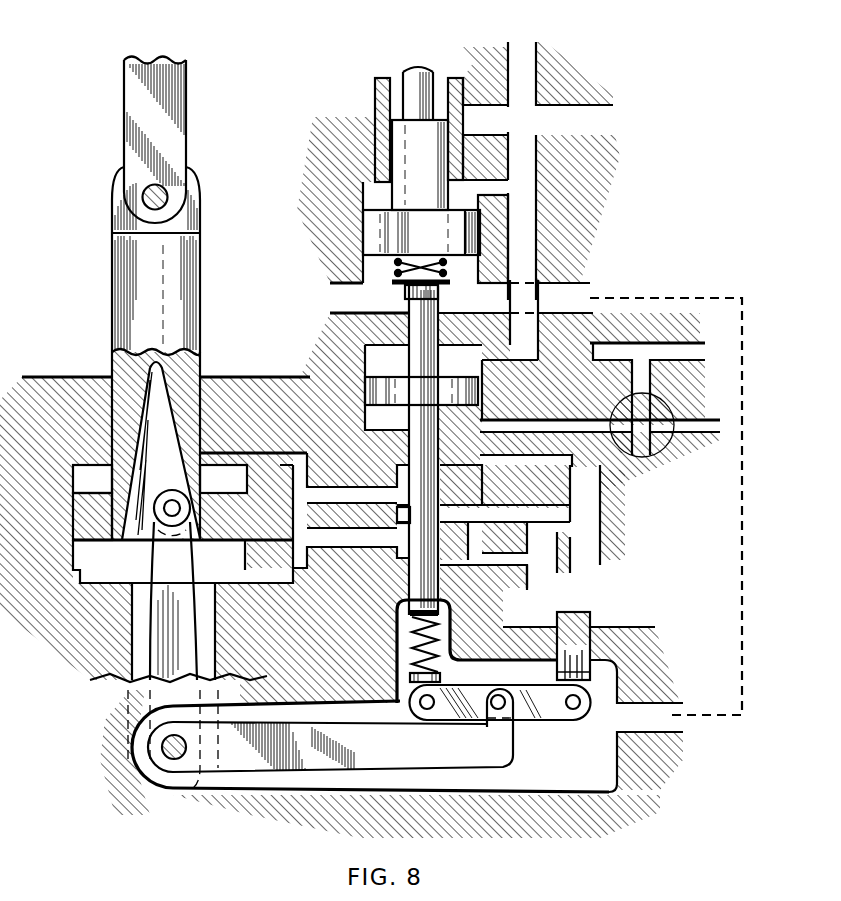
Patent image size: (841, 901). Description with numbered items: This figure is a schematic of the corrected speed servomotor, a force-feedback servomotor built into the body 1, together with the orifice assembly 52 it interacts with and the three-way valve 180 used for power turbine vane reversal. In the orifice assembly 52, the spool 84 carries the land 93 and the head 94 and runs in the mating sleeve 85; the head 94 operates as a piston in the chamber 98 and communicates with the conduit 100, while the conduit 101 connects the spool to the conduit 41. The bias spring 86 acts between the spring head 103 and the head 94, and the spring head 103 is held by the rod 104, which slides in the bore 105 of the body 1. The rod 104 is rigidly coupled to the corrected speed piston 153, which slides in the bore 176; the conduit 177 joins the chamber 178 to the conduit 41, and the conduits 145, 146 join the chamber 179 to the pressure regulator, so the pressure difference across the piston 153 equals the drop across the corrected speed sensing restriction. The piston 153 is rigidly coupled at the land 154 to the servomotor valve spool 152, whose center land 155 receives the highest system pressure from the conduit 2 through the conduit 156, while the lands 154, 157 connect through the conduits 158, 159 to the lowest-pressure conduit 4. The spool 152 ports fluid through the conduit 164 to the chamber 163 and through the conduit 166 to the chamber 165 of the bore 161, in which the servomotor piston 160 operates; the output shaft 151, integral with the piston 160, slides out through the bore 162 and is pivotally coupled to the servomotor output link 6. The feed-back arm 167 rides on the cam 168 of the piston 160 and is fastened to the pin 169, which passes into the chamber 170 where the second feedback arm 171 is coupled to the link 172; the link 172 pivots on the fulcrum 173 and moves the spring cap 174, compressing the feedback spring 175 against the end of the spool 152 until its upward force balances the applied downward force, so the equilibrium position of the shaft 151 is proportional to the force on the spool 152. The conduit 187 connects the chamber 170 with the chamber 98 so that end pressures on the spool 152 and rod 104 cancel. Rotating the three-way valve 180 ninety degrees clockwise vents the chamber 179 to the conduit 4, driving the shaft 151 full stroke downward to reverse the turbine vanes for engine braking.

The body 1 is at (223, 373).
The conduit 2 is at (590, 552).
The conduit 4 is at (697, 345).
The servomotor output link 6 is at (124, 133).
The conduit 41 is at (605, 120).
The orifice assembly 52 is at (352, 110).
The spool 84 is at (415, 65).
The mating sleeve 85 is at (462, 80).
The bias spring 86 is at (395, 275).
The land 93 is at (402, 142).
The head 94 is at (372, 230).
The chamber 98 is at (500, 257).
The conduit 100 is at (330, 303).
The conduit 101 is at (521, 75).
The spring head 103 is at (445, 285).
The rod 104 is at (378, 363).
The bore 105 is at (405, 300).
The conduit 145 is at (552, 423).
The conduit 146 is at (718, 436).
The output shaft 151 is at (112, 272).
The servomotor valve spool 152 is at (395, 515).
The corrected speed piston 153 is at (367, 392).
The land 154 is at (440, 453).
The center land 155 is at (445, 498).
The conduit 156 is at (600, 520).
The land 157 is at (407, 578).
The conduit 158 is at (483, 473).
The conduit 159 is at (488, 560).
The servomotor piston 160 is at (95, 522).
The bore 161 is at (85, 478).
The bore 162 is at (125, 386).
The chamber 163 is at (222, 470).
The conduit 164 is at (297, 472).
The chamber 165 is at (92, 555).
The conduit 166 is at (303, 588).
The feed-back arm 167 is at (148, 608).
The cam 168 is at (163, 433).
The pin 169 is at (167, 742).
The chamber 170 is at (593, 783).
The second feedback arm 171 is at (393, 773).
The link 172 is at (567, 718).
The fulcrum 173 is at (593, 687).
The spring cap 174 is at (410, 678).
The feedback spring 175 is at (397, 634).
The bore 176 is at (480, 410).
The conduit 177 is at (525, 212).
The chamber 178 is at (473, 372).
The chamber 179 is at (403, 428).
The three-way valve 180 is at (674, 405).
The conduit 187 is at (575, 293).